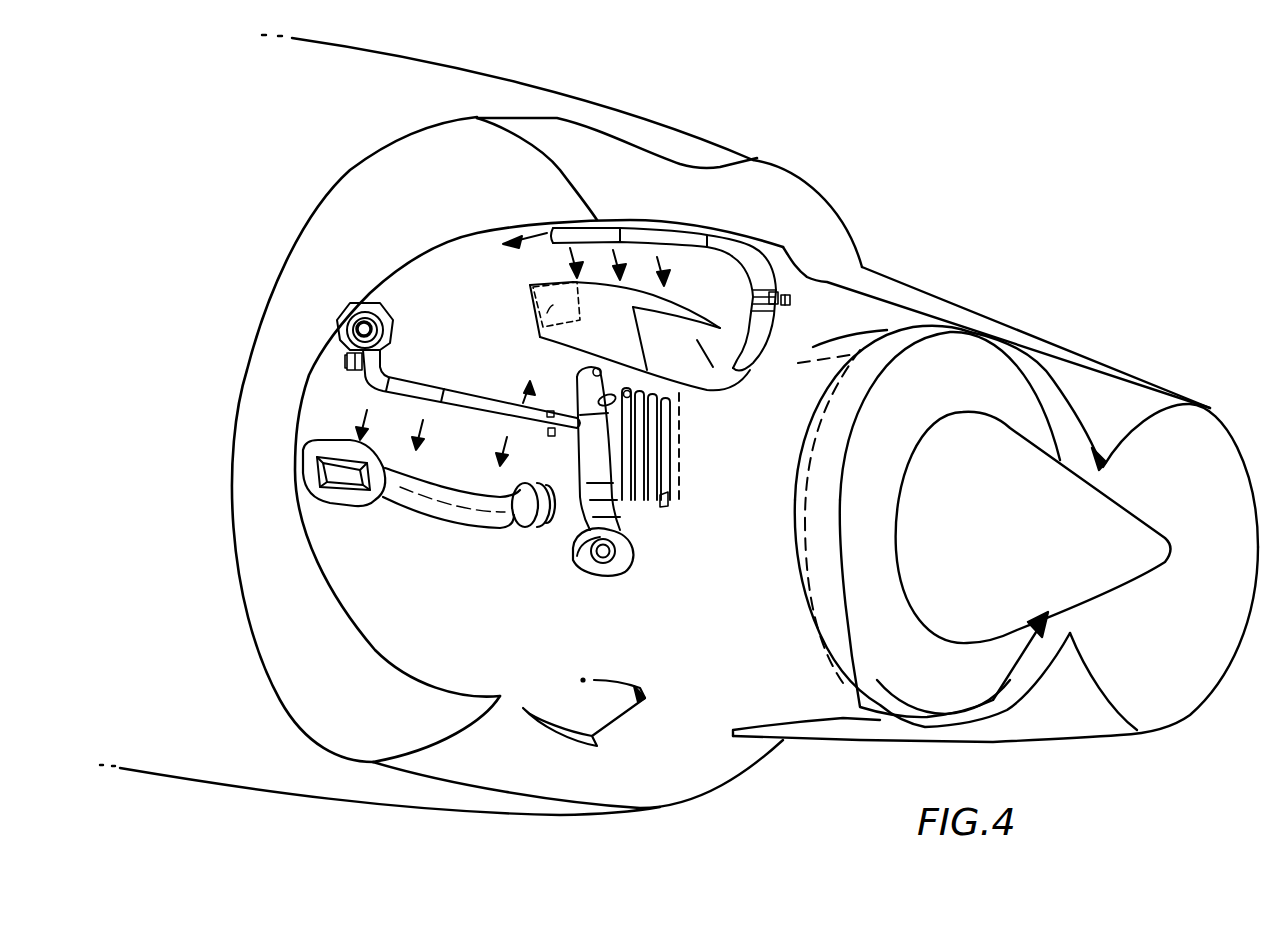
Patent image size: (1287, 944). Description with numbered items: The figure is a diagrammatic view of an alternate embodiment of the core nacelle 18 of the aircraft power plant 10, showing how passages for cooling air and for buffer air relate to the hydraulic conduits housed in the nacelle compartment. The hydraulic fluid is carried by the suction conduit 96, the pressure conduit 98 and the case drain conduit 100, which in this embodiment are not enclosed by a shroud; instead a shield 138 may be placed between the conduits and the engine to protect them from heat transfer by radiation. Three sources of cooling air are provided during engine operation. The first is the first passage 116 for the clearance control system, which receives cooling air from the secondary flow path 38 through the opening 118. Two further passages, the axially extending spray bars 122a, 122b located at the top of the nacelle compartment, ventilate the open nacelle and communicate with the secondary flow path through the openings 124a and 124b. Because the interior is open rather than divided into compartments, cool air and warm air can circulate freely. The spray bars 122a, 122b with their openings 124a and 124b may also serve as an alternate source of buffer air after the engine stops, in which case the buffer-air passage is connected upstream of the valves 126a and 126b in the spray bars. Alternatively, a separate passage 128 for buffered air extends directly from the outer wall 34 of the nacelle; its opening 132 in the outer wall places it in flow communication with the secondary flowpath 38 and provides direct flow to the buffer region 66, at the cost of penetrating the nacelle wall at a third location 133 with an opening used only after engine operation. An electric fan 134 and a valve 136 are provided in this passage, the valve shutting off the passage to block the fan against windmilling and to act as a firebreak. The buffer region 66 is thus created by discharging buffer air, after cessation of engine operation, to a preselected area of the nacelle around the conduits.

The power plant 10 is at (823, 192).
The core nacelle 18 is at (740, 662).
The secondary flow path 38 is at (304, 310).
The outer wall 34 is at (363, 450).
The buffer region 66 is at (680, 447).
The suction conduit 96 is at (597, 373).
The pressure conduit 98 is at (611, 392).
The case drain conduit 100 is at (630, 392).
The first passage 116 is at (463, 513).
The opening 118 is at (357, 478).
The axially extending spray bar 122a is at (427, 386).
The axially extending spray bar 122b is at (673, 227).
The opening 124a is at (385, 320).
The opening 124b is at (540, 318).
The valve 126a is at (347, 365).
The valve 126b is at (790, 302).
The separate passage 128 is at (598, 457).
The opening 132 is at (603, 562).
The third location 133 is at (622, 565).
The electric fan 134 is at (590, 507).
The valve 136 is at (577, 556).
The shield 138 is at (668, 497).